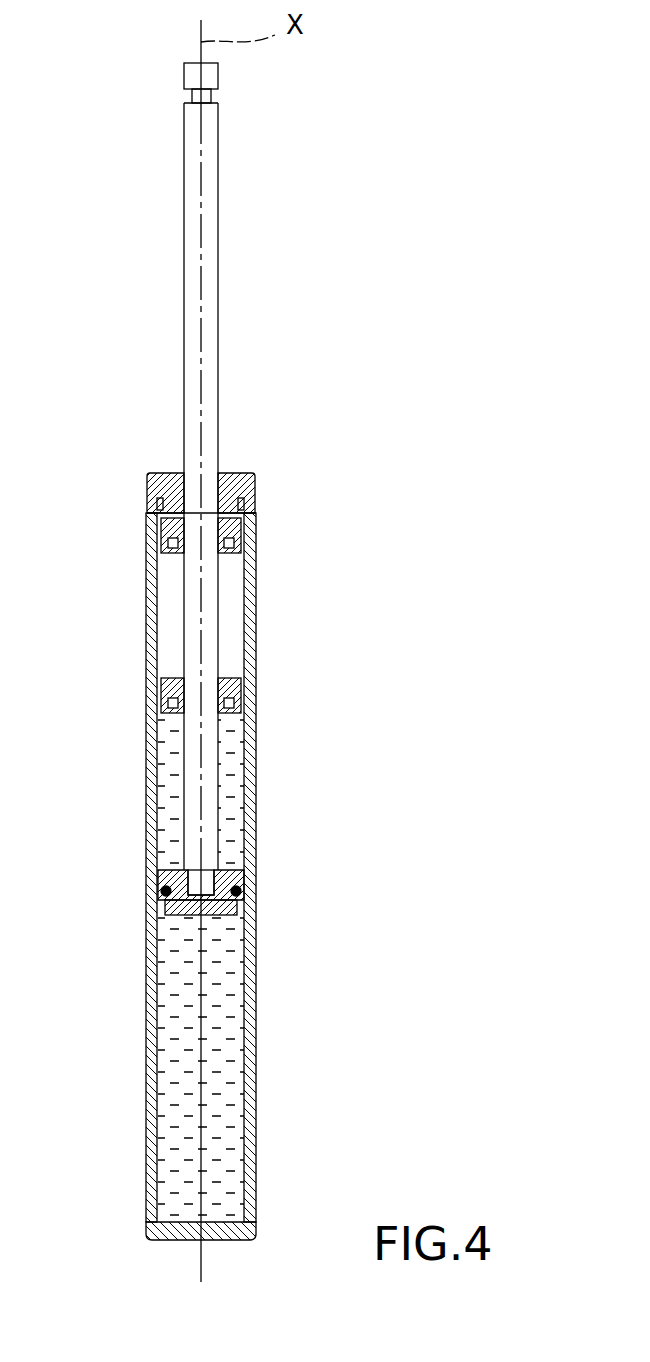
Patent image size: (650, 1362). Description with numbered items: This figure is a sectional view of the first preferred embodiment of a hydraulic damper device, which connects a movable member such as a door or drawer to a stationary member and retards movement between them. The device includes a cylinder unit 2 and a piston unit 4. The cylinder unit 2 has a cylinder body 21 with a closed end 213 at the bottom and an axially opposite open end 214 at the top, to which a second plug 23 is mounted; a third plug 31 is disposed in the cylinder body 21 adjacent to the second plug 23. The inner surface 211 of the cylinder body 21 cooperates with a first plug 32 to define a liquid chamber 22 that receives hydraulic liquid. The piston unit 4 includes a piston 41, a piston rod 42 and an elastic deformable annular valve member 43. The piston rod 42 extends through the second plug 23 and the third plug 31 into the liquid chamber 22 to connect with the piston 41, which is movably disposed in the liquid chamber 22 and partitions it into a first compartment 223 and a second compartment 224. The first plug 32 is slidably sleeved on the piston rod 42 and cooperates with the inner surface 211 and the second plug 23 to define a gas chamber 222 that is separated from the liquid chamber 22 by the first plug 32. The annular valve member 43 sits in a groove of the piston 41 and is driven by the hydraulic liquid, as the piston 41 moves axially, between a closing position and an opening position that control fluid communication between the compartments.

The cylinder unit 2 is at (268, 703).
The piston unit 4 is at (232, 330).
The cylinder body 21 is at (248, 797).
The liquid chamber 22 is at (214, 1094).
The second plug 23 is at (230, 477).
The third plug 31 is at (247, 525).
The first plug 32 is at (230, 672).
The piston 41 is at (240, 873).
The piston rod 42 is at (203, 200).
The annular valve member 43 is at (165, 895).
The inner surface 211 is at (245, 1022).
The closed end 213 is at (225, 1240).
The open end 214 is at (155, 512).
The gas chamber 222 is at (235, 588).
The first compartment 223 is at (230, 757).
The second compartment 224 is at (210, 968).